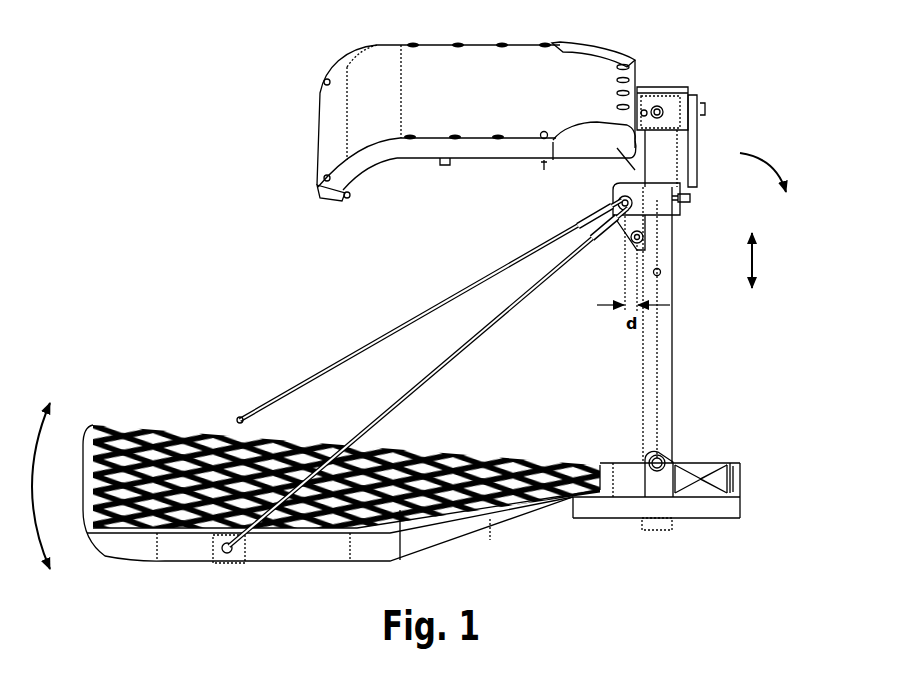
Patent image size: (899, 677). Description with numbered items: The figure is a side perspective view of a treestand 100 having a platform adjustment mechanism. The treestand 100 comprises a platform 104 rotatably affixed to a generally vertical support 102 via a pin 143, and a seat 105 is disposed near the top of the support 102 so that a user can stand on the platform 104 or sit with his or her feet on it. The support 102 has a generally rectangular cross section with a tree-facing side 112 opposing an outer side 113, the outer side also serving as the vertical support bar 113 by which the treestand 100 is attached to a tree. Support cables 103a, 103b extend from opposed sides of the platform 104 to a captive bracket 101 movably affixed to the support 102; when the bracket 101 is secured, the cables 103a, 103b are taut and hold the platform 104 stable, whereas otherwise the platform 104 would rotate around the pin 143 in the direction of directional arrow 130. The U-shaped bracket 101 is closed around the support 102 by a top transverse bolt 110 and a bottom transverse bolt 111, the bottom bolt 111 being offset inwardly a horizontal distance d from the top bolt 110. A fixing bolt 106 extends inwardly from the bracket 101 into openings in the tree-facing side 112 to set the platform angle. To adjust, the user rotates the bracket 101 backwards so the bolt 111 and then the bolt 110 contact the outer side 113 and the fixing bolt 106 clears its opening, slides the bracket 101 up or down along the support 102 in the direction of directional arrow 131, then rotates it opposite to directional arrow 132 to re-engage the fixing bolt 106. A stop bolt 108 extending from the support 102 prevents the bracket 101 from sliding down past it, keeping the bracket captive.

The treestand 100 is at (176, 80).
The captive bracket 101 is at (650, 208).
The vertical support 102 is at (664, 346).
The support cable 103a is at (410, 327).
The support cable 103b is at (430, 380).
The platform 104 is at (88, 440).
The seat 105 is at (500, 107).
The fixing bolt 106 is at (691, 202).
The stop bolt 108 is at (659, 277).
The top transverse bolt 110 is at (625, 212).
The bottom transverse bolt 111 is at (643, 240).
The tree-facing side 112 is at (674, 382).
The outer side 113 is at (692, 150).
The directional arrow 130 is at (20, 488).
The directional arrow 131 is at (752, 262).
The directional arrow 132 is at (769, 163).
The pin 143 is at (661, 453).